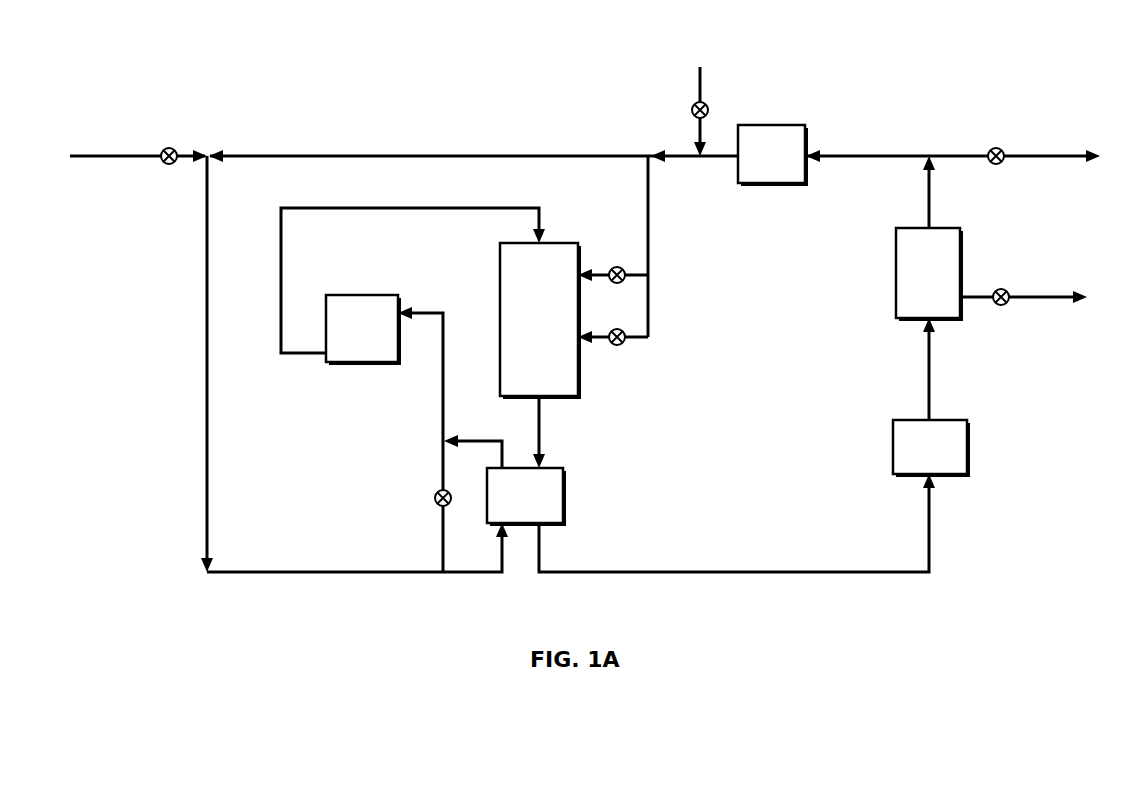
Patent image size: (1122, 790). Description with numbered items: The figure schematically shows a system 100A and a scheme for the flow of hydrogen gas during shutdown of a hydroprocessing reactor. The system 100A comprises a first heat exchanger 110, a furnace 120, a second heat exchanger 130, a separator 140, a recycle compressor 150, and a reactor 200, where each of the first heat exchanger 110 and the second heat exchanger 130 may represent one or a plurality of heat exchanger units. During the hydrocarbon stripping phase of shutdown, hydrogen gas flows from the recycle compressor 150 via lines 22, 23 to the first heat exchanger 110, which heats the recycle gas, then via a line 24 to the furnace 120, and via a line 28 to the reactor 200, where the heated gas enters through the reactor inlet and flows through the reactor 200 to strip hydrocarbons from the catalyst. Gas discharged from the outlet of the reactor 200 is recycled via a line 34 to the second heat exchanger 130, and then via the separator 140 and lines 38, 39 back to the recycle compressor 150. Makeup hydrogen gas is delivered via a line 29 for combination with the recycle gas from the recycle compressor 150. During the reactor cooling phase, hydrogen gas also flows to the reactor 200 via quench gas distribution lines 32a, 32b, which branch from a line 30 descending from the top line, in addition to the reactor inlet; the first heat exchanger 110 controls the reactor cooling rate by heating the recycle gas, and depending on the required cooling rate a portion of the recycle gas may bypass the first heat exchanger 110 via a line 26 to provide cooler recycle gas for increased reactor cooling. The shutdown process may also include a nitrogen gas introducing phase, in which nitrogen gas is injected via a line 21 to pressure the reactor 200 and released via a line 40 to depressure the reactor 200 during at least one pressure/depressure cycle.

The system 100A is at (882, 86).
The line 21 is at (703, 80).
The line 22 is at (548, 154).
The line 23 is at (209, 436).
The line 24 is at (466, 439).
The line 26 is at (441, 464).
The line 28 is at (412, 206).
The line 29 is at (140, 158).
The line 30 is at (650, 218).
The quench gas distribution line 32a is at (598, 278).
The quench gas distribution line 32b is at (598, 340).
The line 34 is at (766, 570).
The line 38 is at (931, 210).
The line 39 is at (855, 154).
The line 40 is at (1040, 154).
The first heat exchanger 110 is at (526, 497).
The furnace 120 is at (363, 330).
The second heat exchanger 130 is at (931, 397).
The separator 140 is at (991, 274).
The recycle compressor 150 is at (773, 155).
The reactor 200 is at (540, 355).